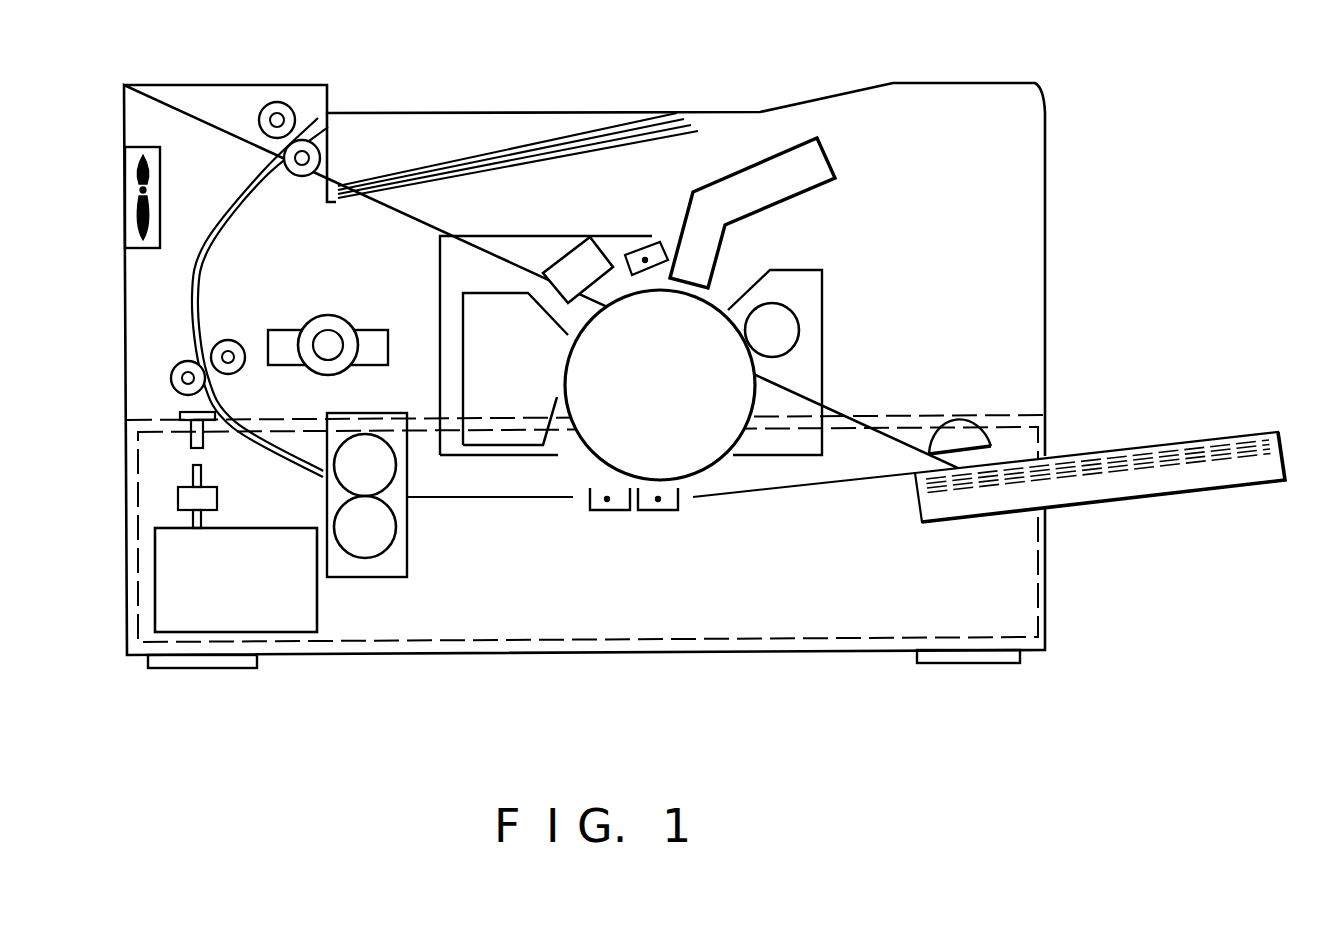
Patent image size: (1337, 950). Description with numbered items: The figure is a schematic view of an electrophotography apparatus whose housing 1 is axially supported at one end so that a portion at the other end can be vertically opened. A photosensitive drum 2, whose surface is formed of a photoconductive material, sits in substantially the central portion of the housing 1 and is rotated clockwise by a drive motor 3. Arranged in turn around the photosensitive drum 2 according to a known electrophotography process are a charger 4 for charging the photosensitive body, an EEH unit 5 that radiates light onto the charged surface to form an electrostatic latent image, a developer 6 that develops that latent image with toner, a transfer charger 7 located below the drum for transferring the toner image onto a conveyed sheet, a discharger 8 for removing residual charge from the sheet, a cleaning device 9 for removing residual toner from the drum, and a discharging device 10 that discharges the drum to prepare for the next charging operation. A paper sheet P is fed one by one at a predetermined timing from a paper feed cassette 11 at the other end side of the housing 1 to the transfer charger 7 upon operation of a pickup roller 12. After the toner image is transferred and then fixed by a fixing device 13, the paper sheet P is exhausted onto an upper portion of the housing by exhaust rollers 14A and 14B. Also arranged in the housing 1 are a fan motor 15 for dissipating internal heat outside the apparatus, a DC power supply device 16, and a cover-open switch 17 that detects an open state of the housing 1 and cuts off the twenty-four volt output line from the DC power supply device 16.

The housing 1 is at (1047, 287).
The photosensitive drum 2 is at (720, 455).
The drive motor 3 is at (338, 322).
The charger 4 is at (637, 247).
The EEH unit 5 is at (832, 152).
The developer 6 is at (812, 290).
The transfer charger 7 is at (660, 512).
The discharger 8 is at (607, 512).
The cleaning device 9 is at (492, 293).
The discharging device 10 is at (592, 282).
The paper feed cassette 11 is at (1205, 478).
The pickup roller 12 is at (927, 450).
The fixing device 13 is at (400, 548).
The exhaust roller 14A is at (232, 340).
The exhaust roller 14B is at (277, 102).
The fan motor 15 is at (157, 168).
The DC power supply device 16 is at (317, 612).
The cover-open switch 17 is at (217, 500).
The paper sheet P is at (520, 143).